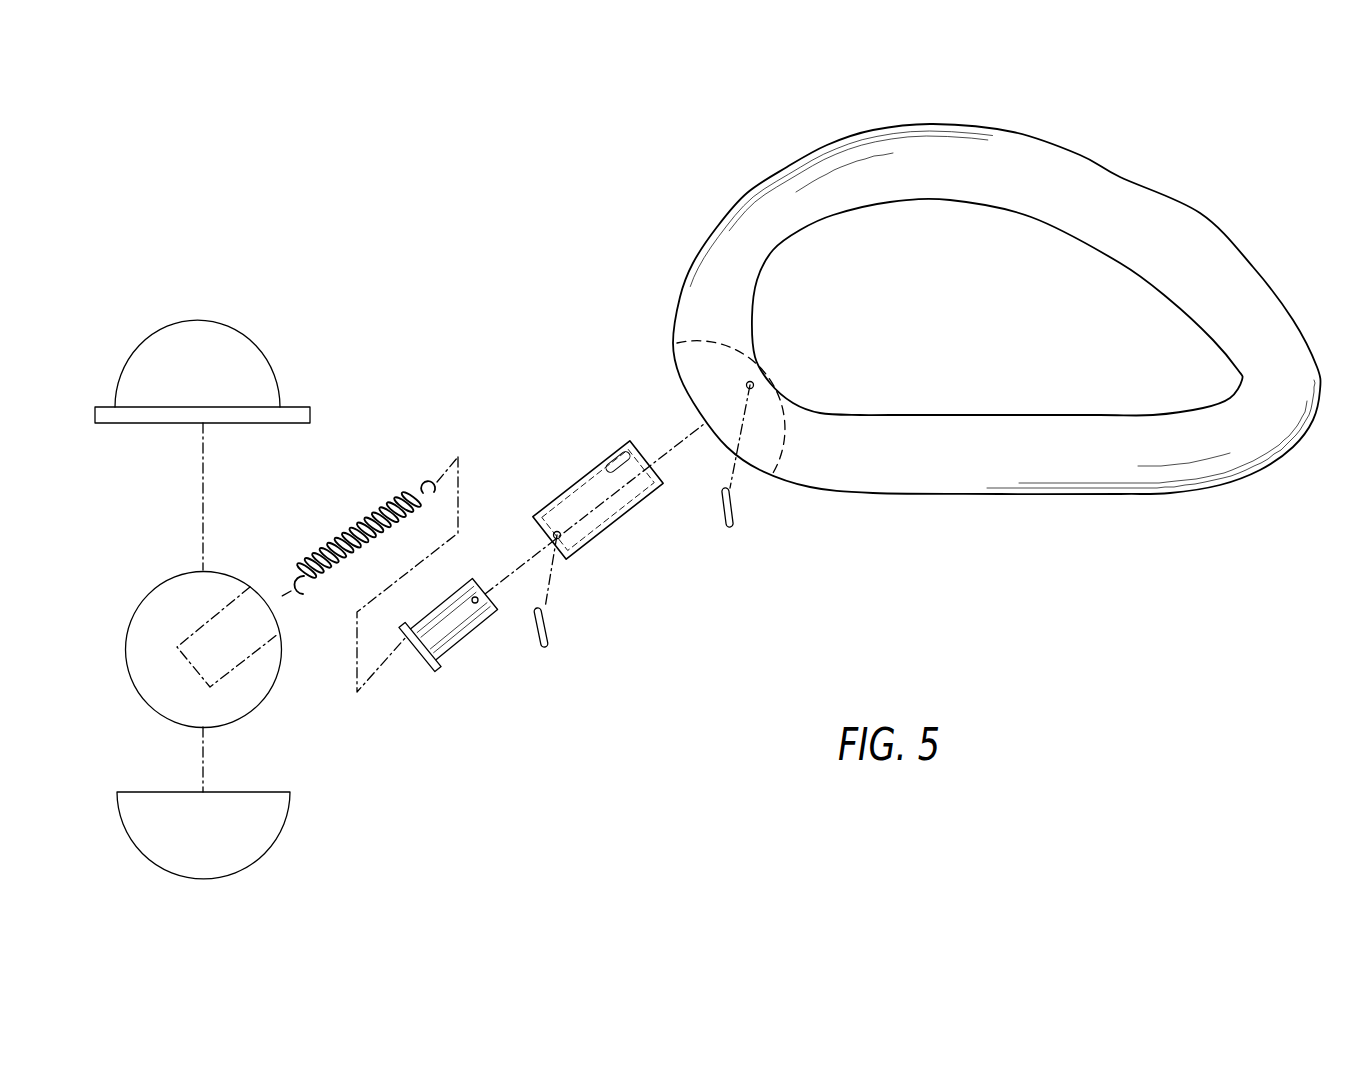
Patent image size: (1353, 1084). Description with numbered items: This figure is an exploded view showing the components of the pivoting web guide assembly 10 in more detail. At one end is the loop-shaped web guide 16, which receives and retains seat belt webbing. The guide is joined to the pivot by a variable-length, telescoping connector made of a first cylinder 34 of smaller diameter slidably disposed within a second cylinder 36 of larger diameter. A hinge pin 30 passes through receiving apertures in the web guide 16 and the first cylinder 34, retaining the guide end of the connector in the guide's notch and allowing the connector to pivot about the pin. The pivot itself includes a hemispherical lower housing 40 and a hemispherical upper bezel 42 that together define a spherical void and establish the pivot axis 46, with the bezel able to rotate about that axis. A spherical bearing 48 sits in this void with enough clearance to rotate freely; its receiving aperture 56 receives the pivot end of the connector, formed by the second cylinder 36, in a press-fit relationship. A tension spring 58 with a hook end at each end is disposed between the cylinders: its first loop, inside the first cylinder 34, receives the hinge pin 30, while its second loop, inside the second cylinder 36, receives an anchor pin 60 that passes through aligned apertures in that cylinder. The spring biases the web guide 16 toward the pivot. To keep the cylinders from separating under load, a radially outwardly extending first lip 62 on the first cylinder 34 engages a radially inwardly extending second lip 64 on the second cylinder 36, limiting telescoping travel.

The pivoting web guide assembly 10 is at (322, 180).
The web guide 16 is at (918, 203).
The hinge pin 30 is at (733, 515).
The first cylinder 34 is at (452, 645).
The second cylinder 36 is at (625, 518).
The lower housing 40 is at (263, 855).
The upper bezel 42 is at (177, 320).
The pivot axis 46 is at (203, 485).
The spherical bearing 48 is at (143, 592).
The receiving aperture 56 is at (197, 660).
The spring 58 is at (350, 528).
The anchor pin 60 is at (545, 630).
The first lip 62 is at (436, 672).
The second lip 64 is at (610, 470).